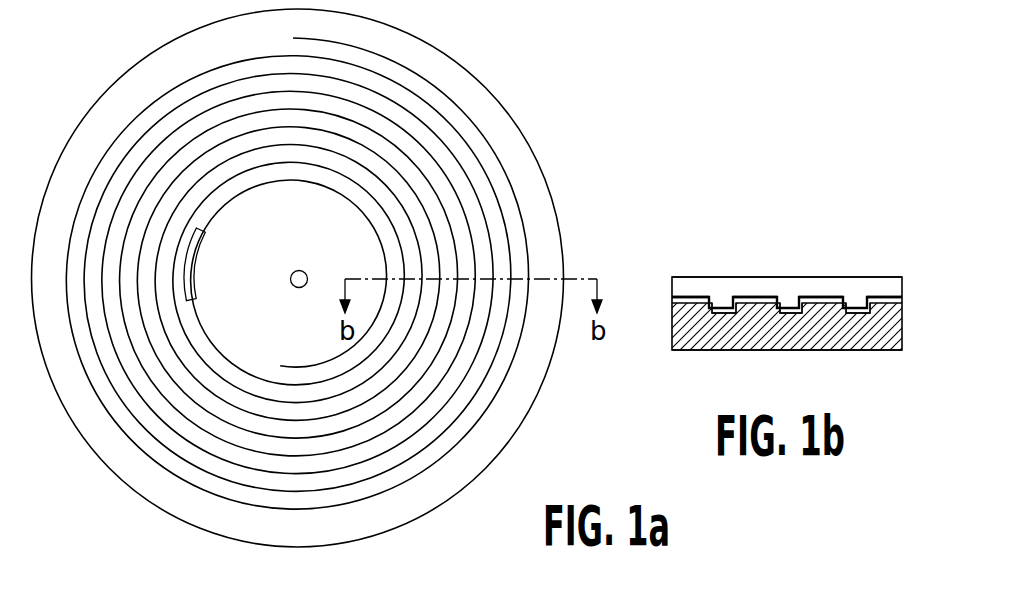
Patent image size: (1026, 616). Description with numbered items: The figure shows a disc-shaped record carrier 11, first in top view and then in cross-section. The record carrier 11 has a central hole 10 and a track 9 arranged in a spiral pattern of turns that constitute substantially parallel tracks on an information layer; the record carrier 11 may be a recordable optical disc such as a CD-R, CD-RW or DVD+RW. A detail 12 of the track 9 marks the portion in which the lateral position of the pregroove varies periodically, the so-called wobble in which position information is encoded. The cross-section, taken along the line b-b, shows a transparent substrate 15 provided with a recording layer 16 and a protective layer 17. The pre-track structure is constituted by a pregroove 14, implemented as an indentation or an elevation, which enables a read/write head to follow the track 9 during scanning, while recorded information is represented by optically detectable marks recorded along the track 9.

In FIG. 1a, the track 9 is at (158, 99).
In FIG. 1a, the central hole 10 is at (298, 270).
In FIG. 1a, the record carrier 11 is at (540, 105).
In FIG. 1b, the record carrier 11 is at (680, 252).
In FIG. 1a, the detail of the track 12 is at (203, 276).
In FIG. 1b, the pregroove 14 is at (787, 316).
In FIG. 1b, the transparent substrate 15 is at (694, 341).
In FIG. 1b, the recording layer 16 is at (870, 297).
In FIG. 1b, the protective layer 17 is at (781, 288).